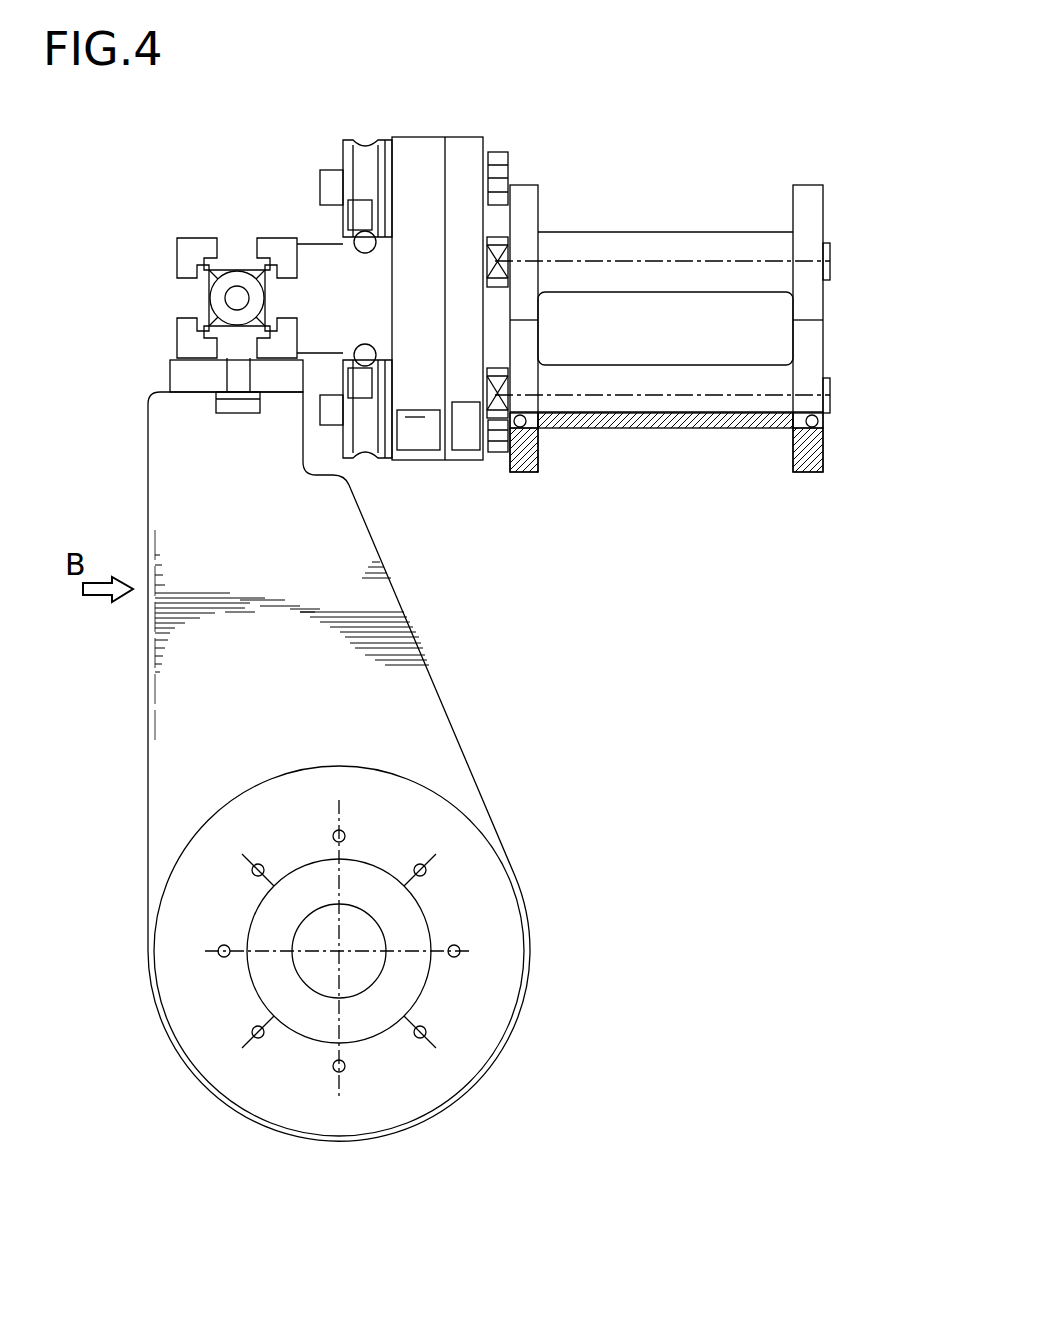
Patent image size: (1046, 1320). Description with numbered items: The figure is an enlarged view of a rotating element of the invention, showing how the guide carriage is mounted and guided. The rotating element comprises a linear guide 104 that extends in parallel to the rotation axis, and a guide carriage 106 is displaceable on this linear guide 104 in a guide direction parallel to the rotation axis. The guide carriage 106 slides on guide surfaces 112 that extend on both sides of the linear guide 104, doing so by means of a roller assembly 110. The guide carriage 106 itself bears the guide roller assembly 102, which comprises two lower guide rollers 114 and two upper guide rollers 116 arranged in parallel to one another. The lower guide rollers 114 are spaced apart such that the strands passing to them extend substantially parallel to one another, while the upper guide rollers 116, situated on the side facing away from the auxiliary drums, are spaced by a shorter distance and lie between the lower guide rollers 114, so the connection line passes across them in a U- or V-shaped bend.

The guide roller assembly 102 is at (712, 284).
The linear guide 104 is at (350, 275).
The guide carriage 106 is at (462, 168).
The roller assembly 110 is at (350, 148).
The guide surfaces 112 is at (367, 224).
The lower guide rollers 114 is at (813, 378).
The upper guide rollers 116 is at (802, 205).